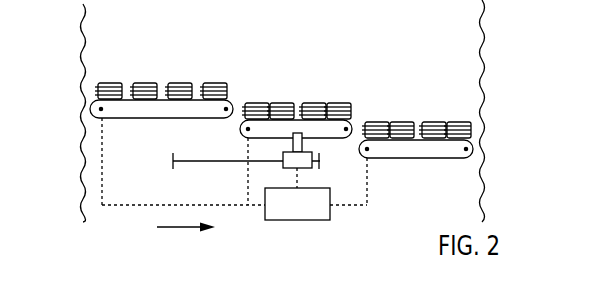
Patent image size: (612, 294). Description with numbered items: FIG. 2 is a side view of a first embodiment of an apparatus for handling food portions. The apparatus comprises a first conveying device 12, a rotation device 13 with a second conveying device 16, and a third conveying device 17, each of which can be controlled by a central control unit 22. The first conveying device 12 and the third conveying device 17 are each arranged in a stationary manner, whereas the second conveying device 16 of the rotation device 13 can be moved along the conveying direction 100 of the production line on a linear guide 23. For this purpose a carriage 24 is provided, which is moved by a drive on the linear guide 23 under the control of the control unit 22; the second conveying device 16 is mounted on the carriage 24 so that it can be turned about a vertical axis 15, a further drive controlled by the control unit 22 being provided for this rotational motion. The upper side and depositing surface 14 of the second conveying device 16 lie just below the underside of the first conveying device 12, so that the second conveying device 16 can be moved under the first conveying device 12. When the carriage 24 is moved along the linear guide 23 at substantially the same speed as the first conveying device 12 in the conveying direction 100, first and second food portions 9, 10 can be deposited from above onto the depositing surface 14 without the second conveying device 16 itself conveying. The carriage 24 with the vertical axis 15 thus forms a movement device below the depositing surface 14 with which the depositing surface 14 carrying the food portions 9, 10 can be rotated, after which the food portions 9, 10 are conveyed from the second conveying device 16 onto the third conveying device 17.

The first food portion 9 is at (116, 83).
The second food portion 10 is at (262, 103).
The first conveying device 12 is at (165, 52).
The rotation device 13 is at (270, 62).
The depositing surface 14 is at (298, 118).
The vertical axis 15 is at (293, 142).
The second conveying device 16 is at (336, 147).
The third conveying device 17 is at (415, 91).
The control unit 22 is at (289, 214).
The linear guide 23 is at (193, 163).
The carriage 24 is at (283, 166).
The conveying direction 100 is at (186, 238).